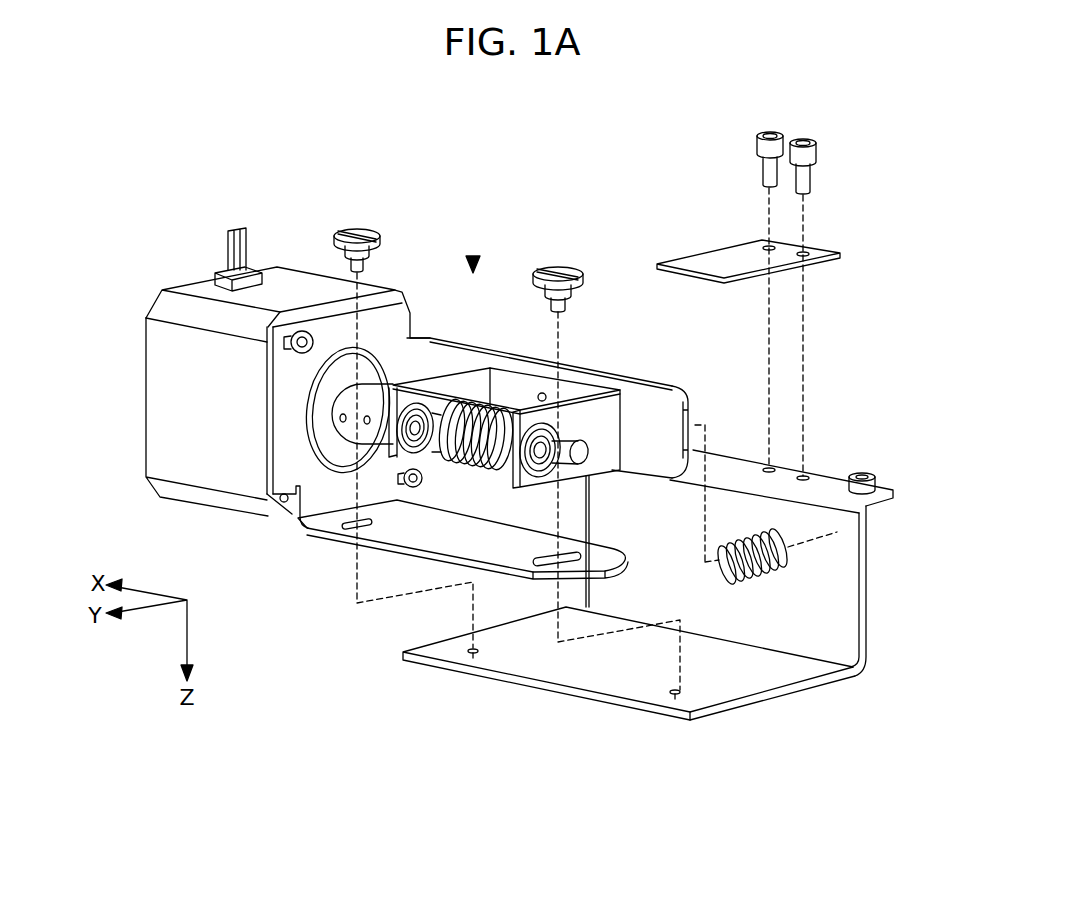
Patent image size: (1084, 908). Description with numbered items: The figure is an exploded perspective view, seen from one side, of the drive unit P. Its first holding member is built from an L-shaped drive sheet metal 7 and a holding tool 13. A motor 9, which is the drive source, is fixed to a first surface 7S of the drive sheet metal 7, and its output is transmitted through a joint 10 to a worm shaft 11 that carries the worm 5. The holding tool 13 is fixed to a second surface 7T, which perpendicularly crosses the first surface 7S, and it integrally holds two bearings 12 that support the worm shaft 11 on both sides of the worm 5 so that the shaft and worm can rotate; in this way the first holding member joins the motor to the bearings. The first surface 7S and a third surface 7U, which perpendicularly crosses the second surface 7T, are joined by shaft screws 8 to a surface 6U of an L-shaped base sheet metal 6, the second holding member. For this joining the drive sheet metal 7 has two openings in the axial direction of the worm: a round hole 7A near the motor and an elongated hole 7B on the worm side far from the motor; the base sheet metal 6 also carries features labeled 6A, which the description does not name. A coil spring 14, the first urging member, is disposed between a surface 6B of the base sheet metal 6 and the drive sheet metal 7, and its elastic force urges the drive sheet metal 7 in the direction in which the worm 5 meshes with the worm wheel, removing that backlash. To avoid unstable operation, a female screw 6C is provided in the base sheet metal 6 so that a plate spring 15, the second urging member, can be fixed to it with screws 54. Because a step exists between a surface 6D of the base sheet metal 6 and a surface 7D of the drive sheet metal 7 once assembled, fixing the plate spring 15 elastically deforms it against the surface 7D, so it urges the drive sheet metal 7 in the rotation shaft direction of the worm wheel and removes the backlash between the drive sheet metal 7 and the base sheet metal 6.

The worm 5 is at (468, 402).
The L-shaped base sheet metal 6 is at (786, 664).
The mounting holes of base 6A is at (470, 654).
The surface of the base sheet metal 6B is at (835, 532).
The female screw 6C is at (803, 478).
The surface of the base sheet metal 6D is at (717, 462).
The surface of the base sheet metal 6U is at (744, 666).
The L-shaped drive sheet metal 7 is at (303, 482).
The round hole 7A is at (352, 527).
The elongated hole 7B is at (565, 572).
The surface of the drive sheet metal 7D is at (646, 378).
The first surface of the drive sheet metal 7S is at (263, 462).
The second surface of the drive sheet metal 7T is at (662, 433).
The third surface of the drive sheet metal 7U is at (617, 570).
The shaft screw 8 is at (365, 230).
The motor 9 is at (293, 287).
The joint 10 is at (366, 393).
The worm shaft 11 is at (433, 422).
The bearings 12 is at (414, 403).
The holding tool 13 is at (517, 387).
The spring 14 is at (790, 547).
The plate spring 15 is at (841, 253).
The screw 54 is at (769, 166).
The drive unit P is at (474, 258).